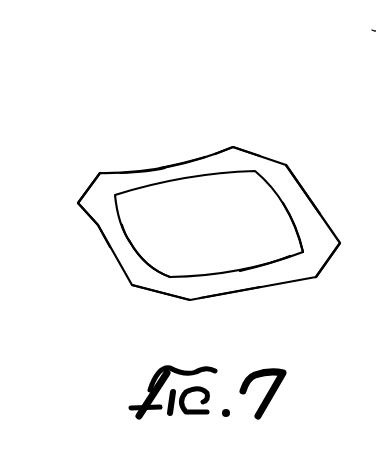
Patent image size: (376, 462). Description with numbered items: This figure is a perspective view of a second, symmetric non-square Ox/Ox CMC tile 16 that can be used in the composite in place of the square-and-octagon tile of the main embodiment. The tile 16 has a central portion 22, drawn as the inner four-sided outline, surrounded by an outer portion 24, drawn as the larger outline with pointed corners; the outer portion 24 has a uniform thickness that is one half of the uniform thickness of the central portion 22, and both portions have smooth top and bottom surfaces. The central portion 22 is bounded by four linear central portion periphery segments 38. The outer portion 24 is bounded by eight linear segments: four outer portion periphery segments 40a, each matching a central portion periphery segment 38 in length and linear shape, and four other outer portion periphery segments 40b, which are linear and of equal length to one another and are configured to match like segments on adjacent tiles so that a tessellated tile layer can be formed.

The Ox/Ox CMC tile 16 is at (154, 66).
The central portion 22 is at (250, 207).
The outer portion 24 is at (279, 181).
The central portion periphery segment 38 is at (181, 174).
The outer portion periphery segment 40a is at (141, 172).
The outer portion periphery segment 40b is at (90, 186).